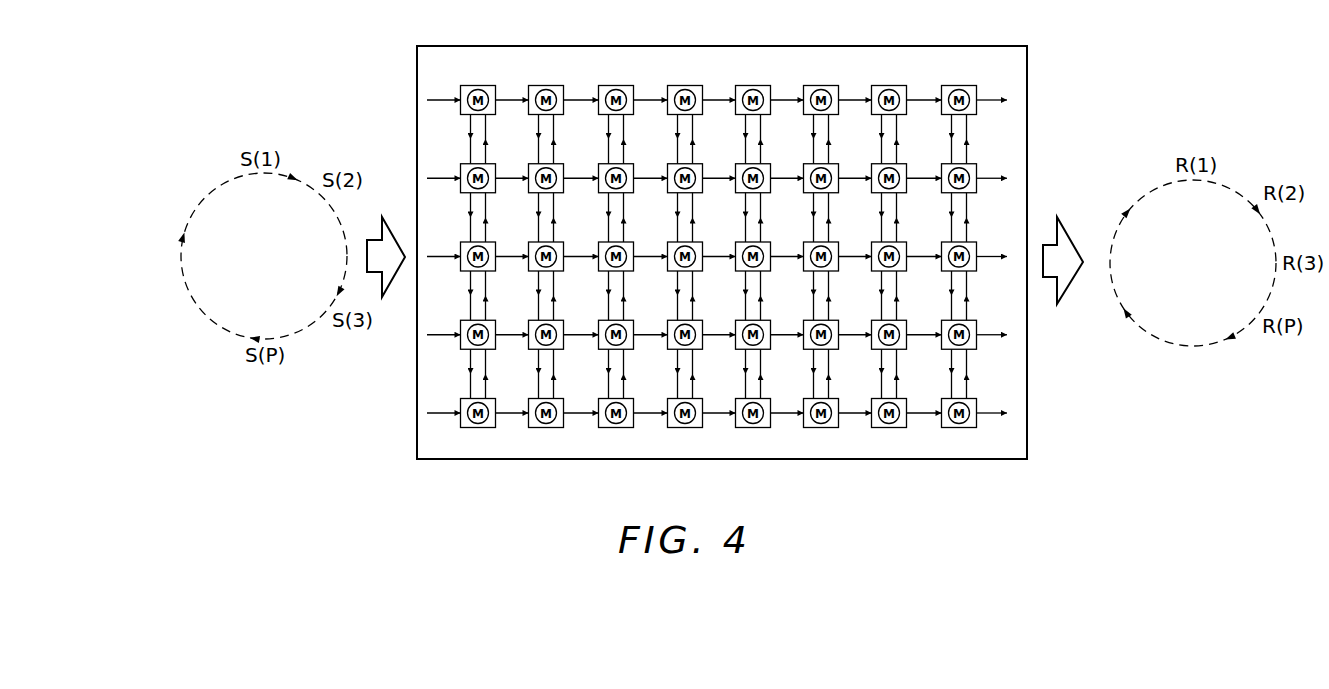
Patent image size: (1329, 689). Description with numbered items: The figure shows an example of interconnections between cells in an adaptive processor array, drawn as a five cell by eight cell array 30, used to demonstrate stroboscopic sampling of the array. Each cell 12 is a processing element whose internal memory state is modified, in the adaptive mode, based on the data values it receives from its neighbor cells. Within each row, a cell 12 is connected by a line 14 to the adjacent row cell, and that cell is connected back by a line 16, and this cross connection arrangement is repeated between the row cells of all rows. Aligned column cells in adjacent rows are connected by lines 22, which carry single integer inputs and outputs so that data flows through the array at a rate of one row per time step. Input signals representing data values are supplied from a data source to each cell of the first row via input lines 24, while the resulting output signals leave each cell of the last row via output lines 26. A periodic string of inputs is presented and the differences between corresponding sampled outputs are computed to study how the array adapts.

The cell 12 is at (738, 86).
The line 14 is at (538, 124).
The line 16 is at (554, 157).
The lines 22 is at (786, 100).
The input lines 24 is at (443, 100).
The output lines 26 is at (994, 100).
The array 30 is at (1041, 41).